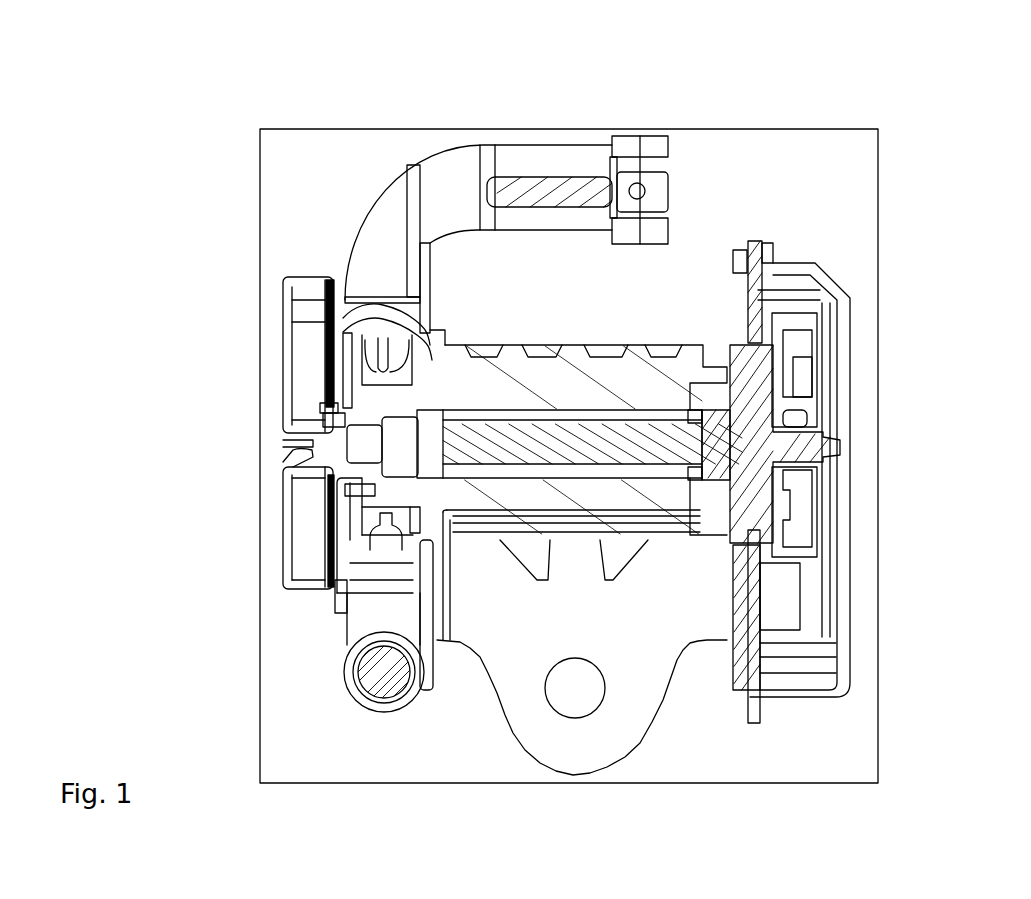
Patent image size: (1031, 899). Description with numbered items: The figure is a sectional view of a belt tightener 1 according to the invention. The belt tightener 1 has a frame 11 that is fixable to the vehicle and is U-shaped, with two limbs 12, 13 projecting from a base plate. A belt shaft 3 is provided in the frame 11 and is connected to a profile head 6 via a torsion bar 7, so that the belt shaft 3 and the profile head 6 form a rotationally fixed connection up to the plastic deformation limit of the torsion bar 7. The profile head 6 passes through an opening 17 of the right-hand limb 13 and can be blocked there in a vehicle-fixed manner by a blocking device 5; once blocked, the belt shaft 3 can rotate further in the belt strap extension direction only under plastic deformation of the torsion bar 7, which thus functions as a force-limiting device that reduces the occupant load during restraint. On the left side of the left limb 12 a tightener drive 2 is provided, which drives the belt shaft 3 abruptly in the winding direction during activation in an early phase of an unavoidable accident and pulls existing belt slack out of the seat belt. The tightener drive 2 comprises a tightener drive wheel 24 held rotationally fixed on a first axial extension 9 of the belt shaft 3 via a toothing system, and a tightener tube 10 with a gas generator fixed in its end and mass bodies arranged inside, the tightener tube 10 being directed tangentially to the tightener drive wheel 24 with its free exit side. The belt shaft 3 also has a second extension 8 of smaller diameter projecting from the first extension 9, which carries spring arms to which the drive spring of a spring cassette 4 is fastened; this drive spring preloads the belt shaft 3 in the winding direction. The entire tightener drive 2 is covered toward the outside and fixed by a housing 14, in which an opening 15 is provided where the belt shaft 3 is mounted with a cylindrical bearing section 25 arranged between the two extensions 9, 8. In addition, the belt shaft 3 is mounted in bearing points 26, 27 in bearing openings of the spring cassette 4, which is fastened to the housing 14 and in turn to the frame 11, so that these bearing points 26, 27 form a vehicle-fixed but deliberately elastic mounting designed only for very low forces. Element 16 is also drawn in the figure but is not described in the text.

The belt tightener 1 is at (740, 195).
The tightener drive 2 is at (330, 236).
The belt shaft 3 is at (642, 382).
The spring cassette 4 is at (300, 376).
The blocking device 5 is at (817, 384).
The profile head 6 is at (821, 454).
The torsion bar 7 is at (579, 623).
The second extension 8 is at (330, 449).
The first axial extension 9 is at (388, 492).
The tightener tube 10 is at (383, 212).
The frame 11 is at (480, 645).
The limb 12 is at (500, 632).
The limb 13 is at (761, 712).
The housing 14 is at (411, 297).
The opening 15 is at (330, 412).
The pipe connection 16 is at (430, 548).
The opening 17 is at (812, 565).
The tightener drive wheel 24 is at (330, 392).
The cylindrical bearing section 25 is at (347, 488).
The bearing point 26 is at (330, 430).
The bearing point 27 is at (333, 480).